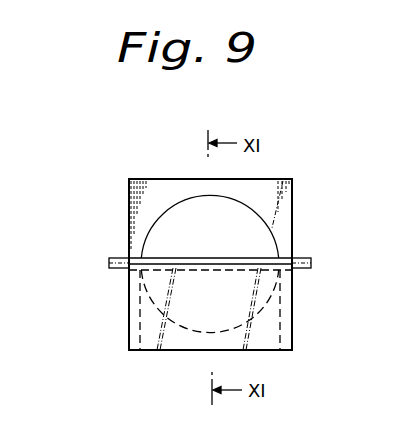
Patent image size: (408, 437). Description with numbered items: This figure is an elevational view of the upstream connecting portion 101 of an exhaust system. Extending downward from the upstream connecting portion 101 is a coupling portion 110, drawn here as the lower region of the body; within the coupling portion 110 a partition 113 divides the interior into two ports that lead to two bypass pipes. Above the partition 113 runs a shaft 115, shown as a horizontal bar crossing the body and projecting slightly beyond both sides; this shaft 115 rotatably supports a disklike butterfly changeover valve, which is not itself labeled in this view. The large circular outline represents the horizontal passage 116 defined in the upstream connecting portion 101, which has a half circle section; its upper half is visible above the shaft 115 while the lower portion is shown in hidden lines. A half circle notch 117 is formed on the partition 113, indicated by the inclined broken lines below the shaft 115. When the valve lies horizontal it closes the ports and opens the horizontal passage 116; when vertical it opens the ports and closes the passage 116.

The upstream connecting portion 101 is at (296, 192).
The coupling portion 110 is at (128, 320).
The partition 113 is at (276, 330).
The shaft 115 is at (110, 262).
The horizontal passage 116 is at (262, 233).
The half circle notch 117 is at (256, 311).